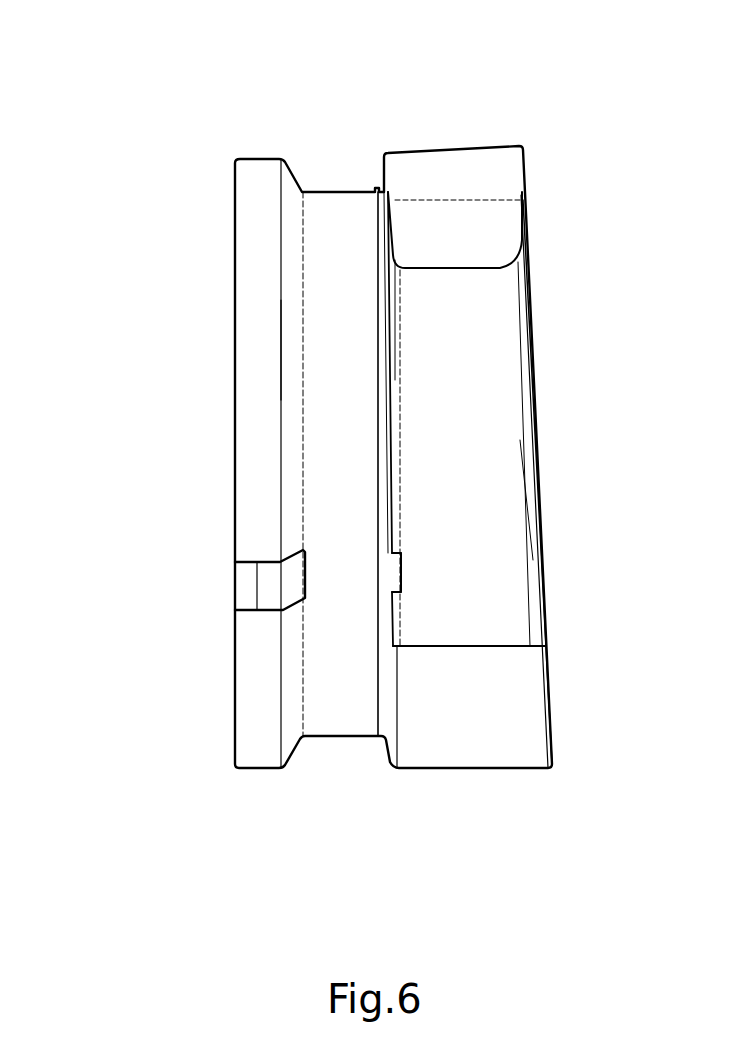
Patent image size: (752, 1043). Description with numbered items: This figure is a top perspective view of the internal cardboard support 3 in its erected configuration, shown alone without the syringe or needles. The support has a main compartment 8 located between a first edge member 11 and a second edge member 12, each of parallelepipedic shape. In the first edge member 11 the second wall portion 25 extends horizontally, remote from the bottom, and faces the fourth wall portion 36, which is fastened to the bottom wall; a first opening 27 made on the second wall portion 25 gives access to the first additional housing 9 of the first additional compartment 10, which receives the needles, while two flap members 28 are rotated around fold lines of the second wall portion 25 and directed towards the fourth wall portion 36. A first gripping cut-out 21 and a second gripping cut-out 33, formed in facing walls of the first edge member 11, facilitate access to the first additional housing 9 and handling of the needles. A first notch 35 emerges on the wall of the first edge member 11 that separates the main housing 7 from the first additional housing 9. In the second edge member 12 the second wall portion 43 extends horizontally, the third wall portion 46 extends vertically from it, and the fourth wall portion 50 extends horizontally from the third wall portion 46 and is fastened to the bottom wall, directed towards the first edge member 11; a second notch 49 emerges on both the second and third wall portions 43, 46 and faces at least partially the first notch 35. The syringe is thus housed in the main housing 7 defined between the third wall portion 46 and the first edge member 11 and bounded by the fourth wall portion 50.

The internal cardboard support 3 is at (165, 103).
The main housing 7 is at (340, 290).
The main compartment 8 is at (350, 738).
The first additional housing 9 is at (473, 486).
The first additional compartment 10 is at (530, 266).
The first edge member 11 is at (553, 773).
The second edge member 12 is at (232, 770).
The first gripping cut-out 21 is at (528, 382).
The second wall portion 25 is at (493, 168).
The first opening 27 is at (480, 577).
The flap members 28 is at (480, 236).
The second gripping cut-out 33 is at (395, 392).
The first notch 35 is at (399, 576).
The fourth wall portion 36 is at (485, 523).
The second wall portion 43 is at (257, 375).
The third wall portion 46 is at (293, 355).
The second notch 49 is at (263, 578).
The fourth wall portion 50 is at (355, 672).